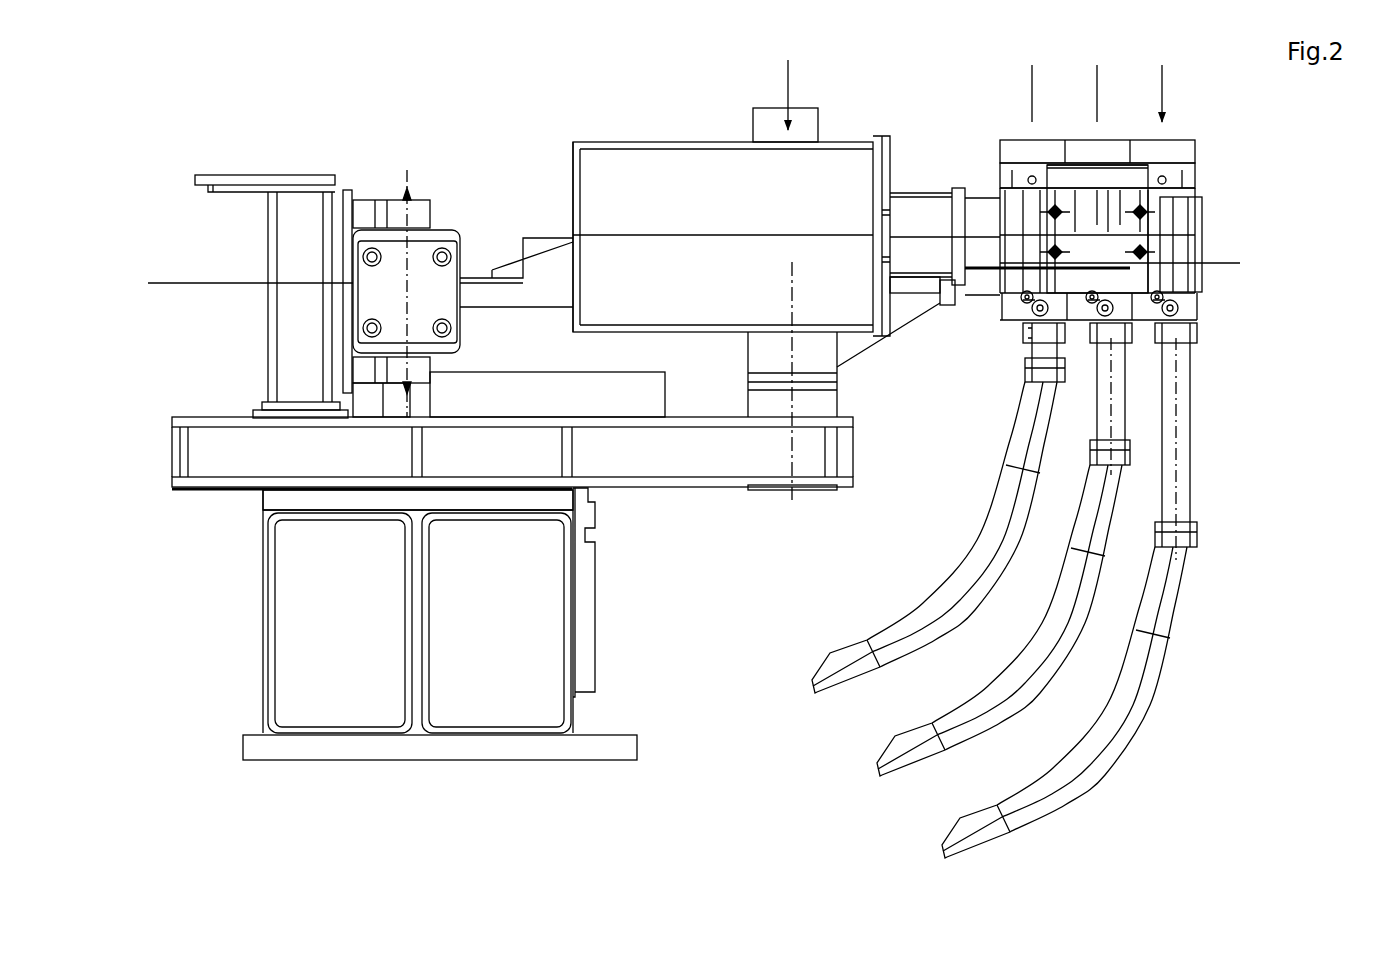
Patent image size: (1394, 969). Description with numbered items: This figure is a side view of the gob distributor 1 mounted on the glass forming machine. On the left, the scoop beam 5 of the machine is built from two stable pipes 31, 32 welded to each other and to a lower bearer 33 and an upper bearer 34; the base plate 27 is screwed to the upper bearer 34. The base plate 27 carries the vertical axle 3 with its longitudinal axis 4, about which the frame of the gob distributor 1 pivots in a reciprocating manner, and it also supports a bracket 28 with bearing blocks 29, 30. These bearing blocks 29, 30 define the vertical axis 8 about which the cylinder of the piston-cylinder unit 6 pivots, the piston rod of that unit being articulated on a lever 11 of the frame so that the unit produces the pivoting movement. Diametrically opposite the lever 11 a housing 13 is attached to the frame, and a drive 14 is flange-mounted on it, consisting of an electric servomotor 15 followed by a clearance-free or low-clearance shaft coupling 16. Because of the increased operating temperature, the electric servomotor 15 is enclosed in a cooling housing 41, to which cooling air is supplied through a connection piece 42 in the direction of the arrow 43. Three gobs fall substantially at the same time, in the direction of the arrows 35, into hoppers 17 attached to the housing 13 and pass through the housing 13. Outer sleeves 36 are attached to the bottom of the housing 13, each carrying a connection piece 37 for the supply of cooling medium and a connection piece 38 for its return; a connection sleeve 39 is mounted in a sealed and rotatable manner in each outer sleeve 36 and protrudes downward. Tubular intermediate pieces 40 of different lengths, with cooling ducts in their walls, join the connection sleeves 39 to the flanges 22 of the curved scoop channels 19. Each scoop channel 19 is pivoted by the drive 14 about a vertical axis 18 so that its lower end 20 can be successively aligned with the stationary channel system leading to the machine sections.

The gob distributor 1 is at (745, 712).
The vertical axle 3 is at (758, 350).
The longitudinal axis 4 is at (792, 500).
The scoop beam 5 is at (406, 668).
The piston-cylinder unit 6 is at (452, 306).
The vertical axis 8 is at (407, 272).
The lever 11 is at (503, 293).
The housing 13 is at (1120, 176).
The drive 14 is at (887, 140).
The electric servomotor 15 is at (662, 178).
The shaft coupling 16 is at (914, 208).
The hopper 17 is at (1150, 148).
The vertical axis 18 is at (1047, 393).
The scoop channel 19 is at (999, 620).
The lower end 20 is at (877, 768).
The flange 22 is at (999, 616).
The base plate 27 is at (677, 487).
The bracket 28 is at (348, 190).
The bearing block 29 is at (433, 212).
The bearing block 30 is at (420, 378).
The pipe 31 is at (272, 630).
The pipe 32 is at (568, 613).
The lower bearer 33 is at (604, 748).
The upper bearer 34 is at (280, 500).
The arrow 35 is at (1097, 68).
The outer sleeve 36 is at (1015, 310).
The connection piece 37 is at (1010, 322).
The connection piece 38 is at (1035, 330).
The connection sleeve 39 is at (1025, 340).
The intermediate piece 40 is at (1025, 368).
The cooling housing 41 is at (598, 174).
The connection piece 42 is at (772, 122).
The arrow 43 is at (793, 66).